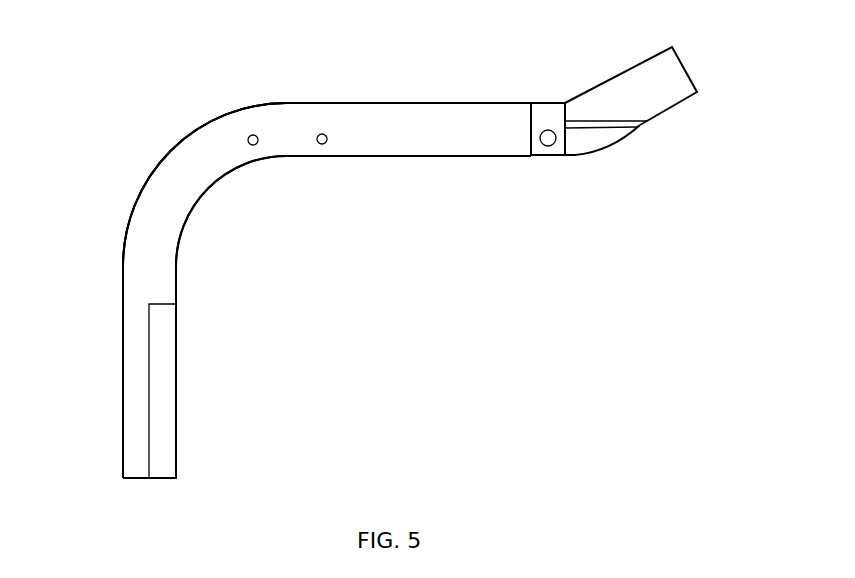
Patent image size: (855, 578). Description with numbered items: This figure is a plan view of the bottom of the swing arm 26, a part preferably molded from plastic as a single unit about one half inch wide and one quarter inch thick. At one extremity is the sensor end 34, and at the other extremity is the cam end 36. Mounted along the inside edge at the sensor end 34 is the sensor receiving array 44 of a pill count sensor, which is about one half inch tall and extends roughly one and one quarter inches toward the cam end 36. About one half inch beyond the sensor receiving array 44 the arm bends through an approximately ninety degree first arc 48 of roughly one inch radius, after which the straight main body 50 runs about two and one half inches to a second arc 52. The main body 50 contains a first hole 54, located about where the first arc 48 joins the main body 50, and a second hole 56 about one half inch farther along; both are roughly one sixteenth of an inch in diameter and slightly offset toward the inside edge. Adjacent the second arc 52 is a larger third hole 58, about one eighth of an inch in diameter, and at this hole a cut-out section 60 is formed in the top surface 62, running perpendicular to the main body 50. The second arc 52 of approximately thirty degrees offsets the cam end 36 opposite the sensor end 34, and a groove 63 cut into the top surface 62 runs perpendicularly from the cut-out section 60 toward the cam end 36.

The swing arm 26 is at (422, 332).
The sensor end 34 is at (146, 490).
The cam end 36 is at (692, 53).
The sensor receiving array 44 is at (162, 400).
The first arc 48 is at (187, 127).
The main body 50 is at (432, 98).
The second arc 52 is at (595, 160).
The first hole 54 is at (253, 145).
The second hole 56 is at (322, 144).
The third hole 58 is at (548, 146).
The cut-out section 60 is at (547, 98).
The top surface 62 is at (155, 210).
The groove 63 is at (643, 133).